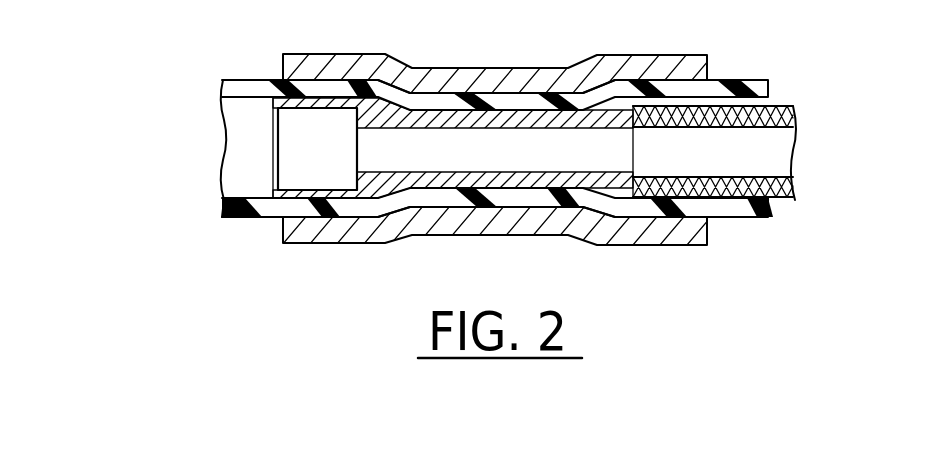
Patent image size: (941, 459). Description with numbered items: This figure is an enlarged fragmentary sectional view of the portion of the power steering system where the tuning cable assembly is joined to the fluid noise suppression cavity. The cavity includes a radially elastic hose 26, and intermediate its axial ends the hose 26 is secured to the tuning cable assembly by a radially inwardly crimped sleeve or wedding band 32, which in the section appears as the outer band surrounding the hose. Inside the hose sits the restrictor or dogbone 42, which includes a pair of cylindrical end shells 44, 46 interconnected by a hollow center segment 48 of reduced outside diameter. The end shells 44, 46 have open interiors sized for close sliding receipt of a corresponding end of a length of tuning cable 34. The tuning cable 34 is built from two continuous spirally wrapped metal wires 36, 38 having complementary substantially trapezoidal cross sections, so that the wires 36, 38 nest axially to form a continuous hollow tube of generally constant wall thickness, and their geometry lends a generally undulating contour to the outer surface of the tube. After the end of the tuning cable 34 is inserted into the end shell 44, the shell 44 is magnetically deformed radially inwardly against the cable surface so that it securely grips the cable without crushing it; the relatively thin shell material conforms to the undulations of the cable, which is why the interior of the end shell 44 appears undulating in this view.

The hose 26 is at (717, 83).
The radially inwardly crimped sleeve or wedding band 32 is at (647, 64).
The tuning cable 34 is at (780, 190).
The wire 36 is at (776, 108).
The wire 38 is at (793, 118).
The restrictor or dogbone 42 is at (510, 105).
The end shell 44 is at (707, 203).
The end shell 46 is at (300, 197).
The hollow center segment 48 is at (443, 183).